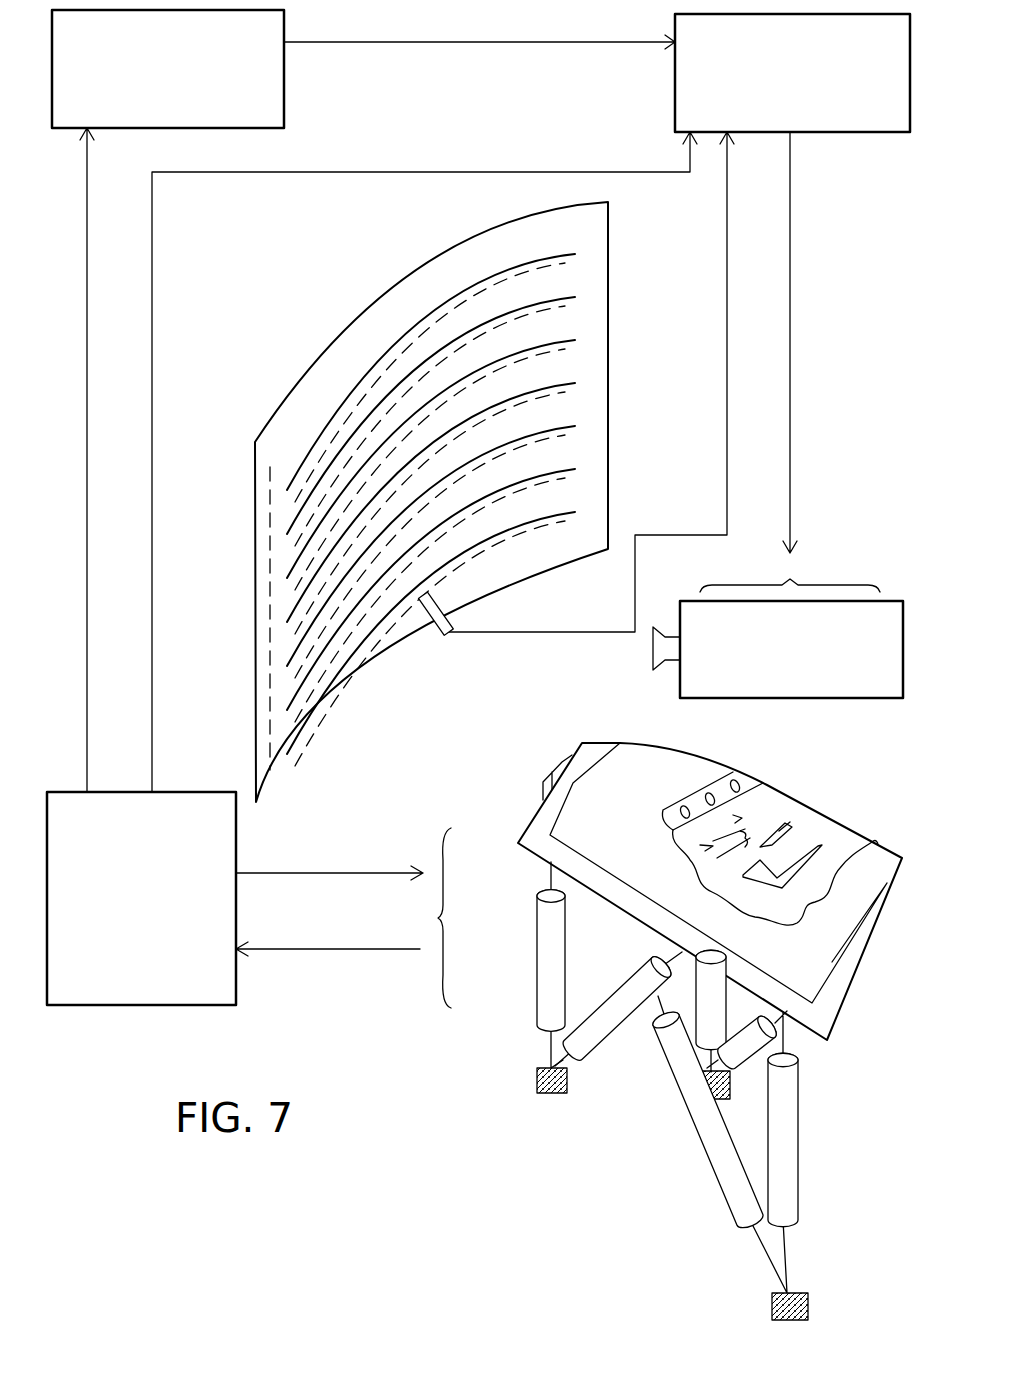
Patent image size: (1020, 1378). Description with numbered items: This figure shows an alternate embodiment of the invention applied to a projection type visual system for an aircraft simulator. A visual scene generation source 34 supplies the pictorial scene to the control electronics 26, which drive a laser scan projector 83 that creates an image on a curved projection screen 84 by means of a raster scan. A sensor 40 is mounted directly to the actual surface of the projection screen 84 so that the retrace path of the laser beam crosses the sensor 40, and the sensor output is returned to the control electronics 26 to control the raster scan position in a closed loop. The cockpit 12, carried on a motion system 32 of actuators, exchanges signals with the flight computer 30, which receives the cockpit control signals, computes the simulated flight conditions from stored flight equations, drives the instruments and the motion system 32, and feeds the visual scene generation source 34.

The cockpit 12 is at (710, 891).
The CRT control electronics 26 is at (675, 97).
The flight computer 30 is at (141, 898).
The motion system 32 is at (834, 1146).
The visual scene generation source 34 is at (285, 97).
The sensor 40 is at (440, 634).
The laser scan projector 83 is at (832, 698).
The projection screen 84 is at (283, 757).